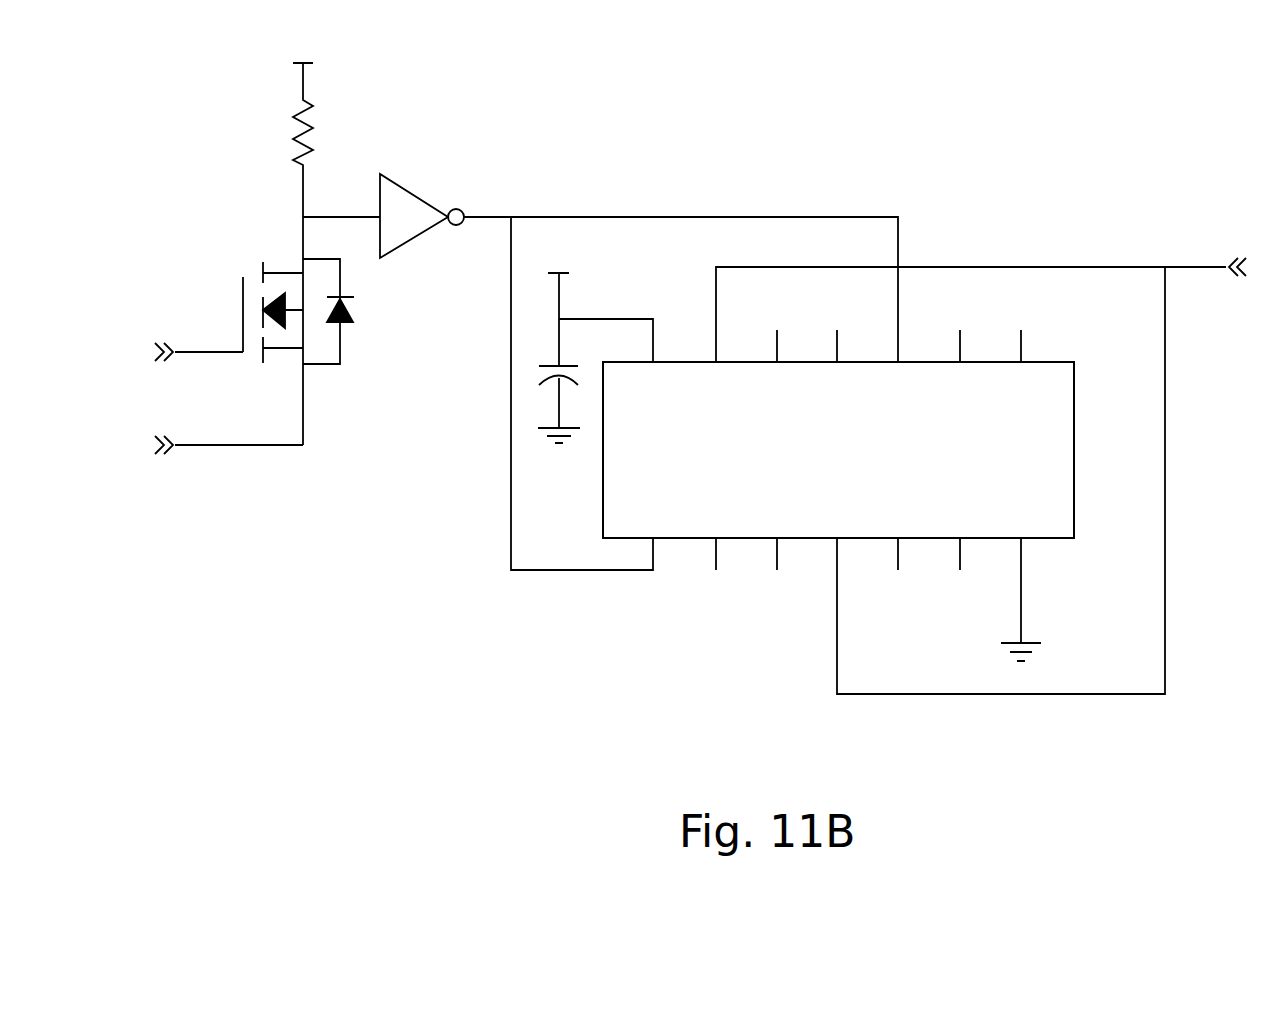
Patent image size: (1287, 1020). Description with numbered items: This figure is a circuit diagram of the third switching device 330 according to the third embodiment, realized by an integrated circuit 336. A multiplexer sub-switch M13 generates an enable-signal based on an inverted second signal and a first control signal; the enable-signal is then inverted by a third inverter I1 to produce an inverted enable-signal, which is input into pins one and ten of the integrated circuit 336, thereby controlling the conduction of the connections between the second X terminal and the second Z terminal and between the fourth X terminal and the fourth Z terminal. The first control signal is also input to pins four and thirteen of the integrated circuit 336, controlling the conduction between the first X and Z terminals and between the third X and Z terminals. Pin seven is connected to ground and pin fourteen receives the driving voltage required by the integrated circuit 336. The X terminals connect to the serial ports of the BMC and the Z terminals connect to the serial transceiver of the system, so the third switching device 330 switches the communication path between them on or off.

The multiplexer sub-switch M13 is at (245, 263).
The third inverter I1 is at (414, 194).
The integrated circuit 336 is at (1064, 540).
The third switching device 330 is at (696, 420).